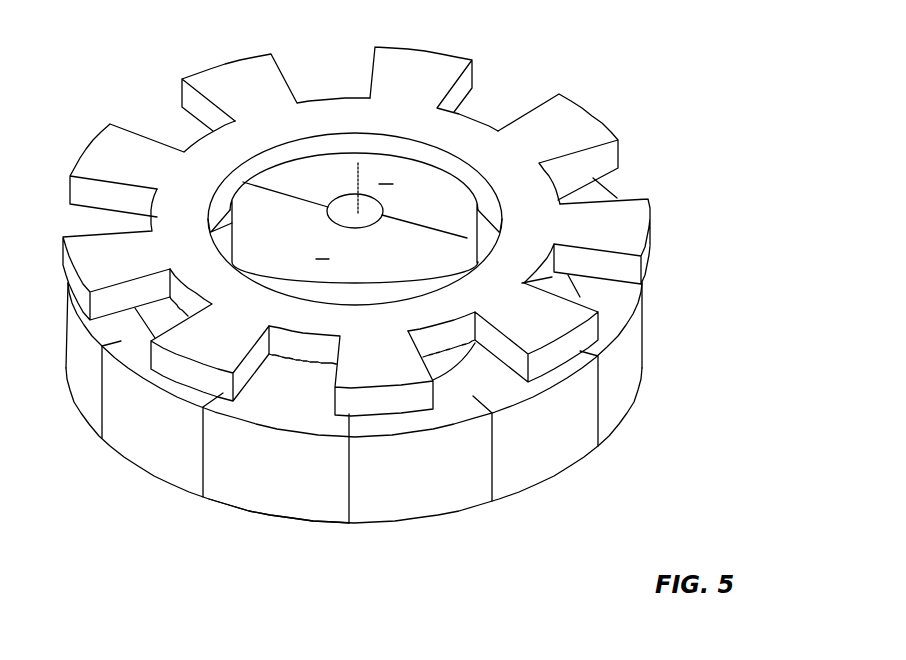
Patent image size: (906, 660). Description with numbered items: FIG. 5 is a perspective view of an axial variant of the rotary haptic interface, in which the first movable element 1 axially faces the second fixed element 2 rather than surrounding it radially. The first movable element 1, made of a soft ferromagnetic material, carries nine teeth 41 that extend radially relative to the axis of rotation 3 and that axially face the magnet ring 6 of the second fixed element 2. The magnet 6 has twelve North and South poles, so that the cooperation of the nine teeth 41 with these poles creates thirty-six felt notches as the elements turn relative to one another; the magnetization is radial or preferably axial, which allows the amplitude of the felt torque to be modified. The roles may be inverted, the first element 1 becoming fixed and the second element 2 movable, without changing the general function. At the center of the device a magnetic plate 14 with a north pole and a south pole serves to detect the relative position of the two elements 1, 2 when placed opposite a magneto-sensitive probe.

The first movable element 1 is at (147, 155).
The second fixed element 2 is at (655, 352).
The axis of rotation 3 is at (358, 183).
The magnet ring 6 is at (260, 477).
The magnetic plate 14 is at (312, 157).
The teeth 41 is at (435, 70).